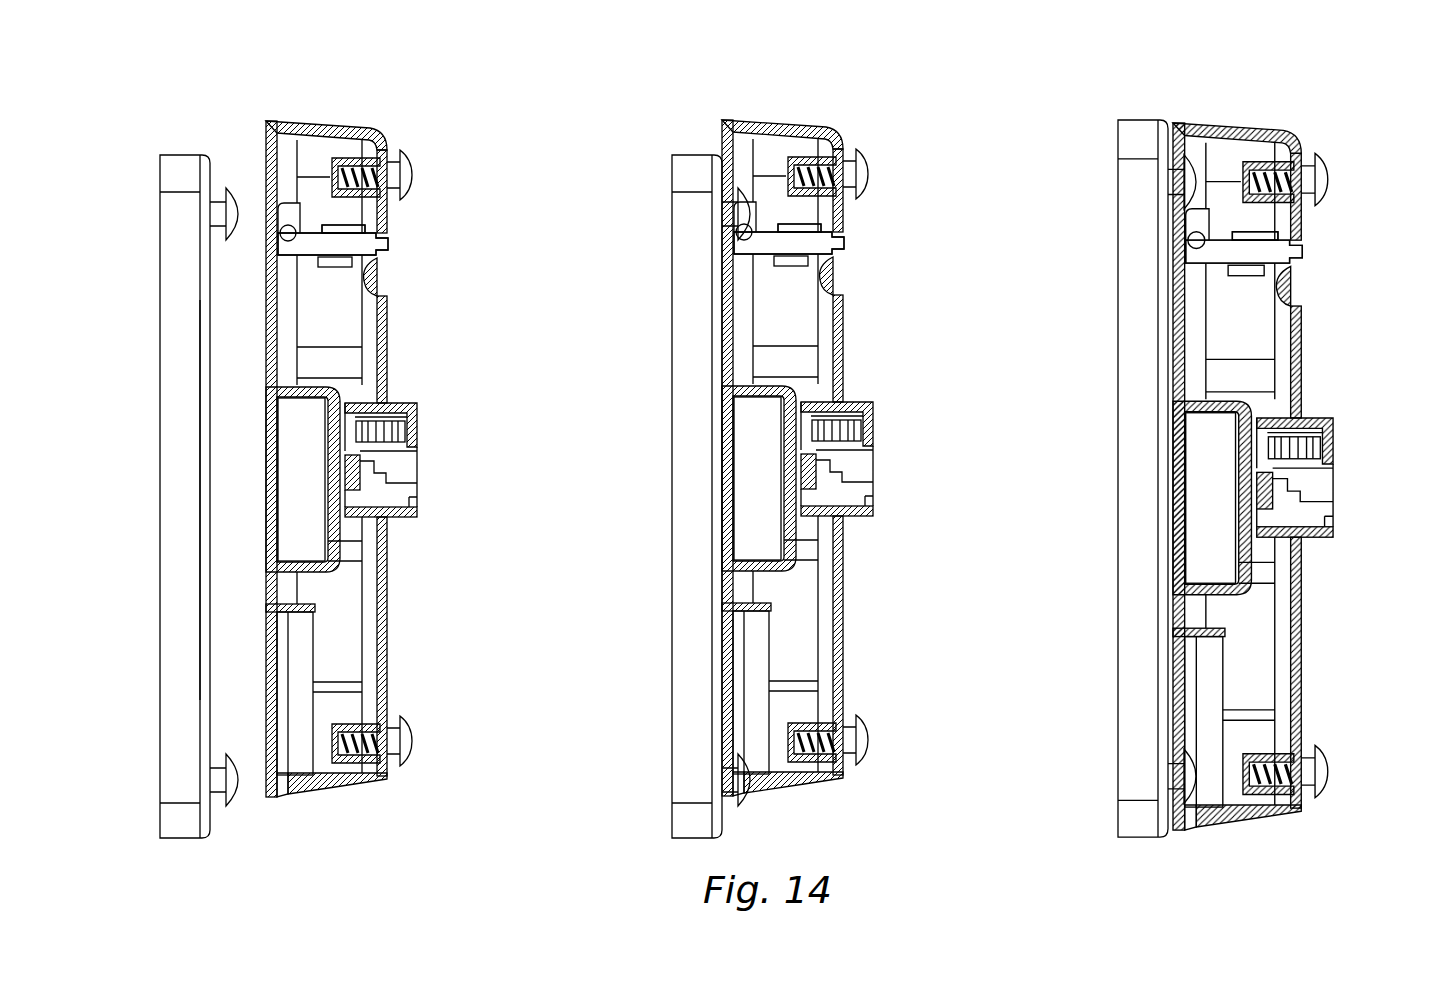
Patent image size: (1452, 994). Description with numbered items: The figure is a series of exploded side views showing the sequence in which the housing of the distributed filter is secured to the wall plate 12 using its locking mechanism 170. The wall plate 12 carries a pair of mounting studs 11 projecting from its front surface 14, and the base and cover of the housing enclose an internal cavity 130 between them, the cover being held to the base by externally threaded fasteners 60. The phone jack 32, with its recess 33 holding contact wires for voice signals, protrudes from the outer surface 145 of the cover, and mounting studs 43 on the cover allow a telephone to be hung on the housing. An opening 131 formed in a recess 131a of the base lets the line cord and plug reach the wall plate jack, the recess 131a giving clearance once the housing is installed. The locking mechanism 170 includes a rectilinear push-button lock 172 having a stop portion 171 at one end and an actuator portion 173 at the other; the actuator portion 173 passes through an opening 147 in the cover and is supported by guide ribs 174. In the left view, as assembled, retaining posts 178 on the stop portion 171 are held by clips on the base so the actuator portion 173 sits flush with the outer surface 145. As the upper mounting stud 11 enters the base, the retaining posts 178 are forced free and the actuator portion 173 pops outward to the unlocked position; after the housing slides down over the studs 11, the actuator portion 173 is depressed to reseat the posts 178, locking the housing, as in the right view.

The mounting studs 11 is at (232, 186).
The wall plate 12 is at (208, 430).
The front surface 14 is at (212, 600).
The phone jack 32 is at (418, 422).
The recess 33 is at (400, 478).
The mounting studs 43 is at (404, 150).
The fasteners 60 is at (410, 172).
The internal cavity 130 is at (350, 575).
The opening 131 is at (330, 520).
The recess 131a is at (285, 470).
The outer surface 145 is at (385, 625).
The opening 147 is at (380, 262).
The locking mechanism 170 is at (412, 215).
The stop portion 171 is at (286, 250).
The push-button lock 172 is at (342, 268).
The actuator portion 173 is at (392, 246).
The guide ribs 174 is at (330, 262).
The retaining posts 178 is at (285, 233).